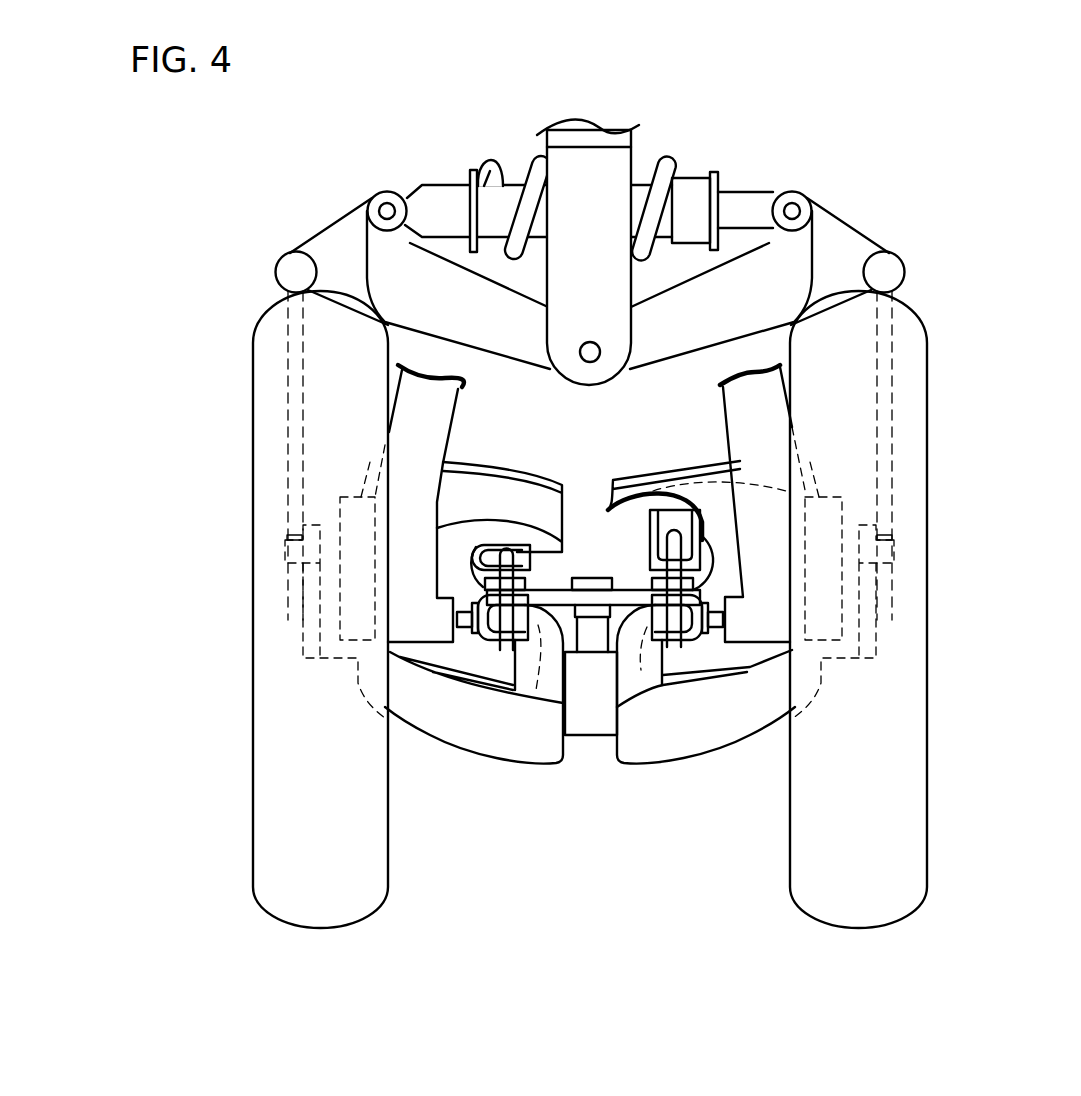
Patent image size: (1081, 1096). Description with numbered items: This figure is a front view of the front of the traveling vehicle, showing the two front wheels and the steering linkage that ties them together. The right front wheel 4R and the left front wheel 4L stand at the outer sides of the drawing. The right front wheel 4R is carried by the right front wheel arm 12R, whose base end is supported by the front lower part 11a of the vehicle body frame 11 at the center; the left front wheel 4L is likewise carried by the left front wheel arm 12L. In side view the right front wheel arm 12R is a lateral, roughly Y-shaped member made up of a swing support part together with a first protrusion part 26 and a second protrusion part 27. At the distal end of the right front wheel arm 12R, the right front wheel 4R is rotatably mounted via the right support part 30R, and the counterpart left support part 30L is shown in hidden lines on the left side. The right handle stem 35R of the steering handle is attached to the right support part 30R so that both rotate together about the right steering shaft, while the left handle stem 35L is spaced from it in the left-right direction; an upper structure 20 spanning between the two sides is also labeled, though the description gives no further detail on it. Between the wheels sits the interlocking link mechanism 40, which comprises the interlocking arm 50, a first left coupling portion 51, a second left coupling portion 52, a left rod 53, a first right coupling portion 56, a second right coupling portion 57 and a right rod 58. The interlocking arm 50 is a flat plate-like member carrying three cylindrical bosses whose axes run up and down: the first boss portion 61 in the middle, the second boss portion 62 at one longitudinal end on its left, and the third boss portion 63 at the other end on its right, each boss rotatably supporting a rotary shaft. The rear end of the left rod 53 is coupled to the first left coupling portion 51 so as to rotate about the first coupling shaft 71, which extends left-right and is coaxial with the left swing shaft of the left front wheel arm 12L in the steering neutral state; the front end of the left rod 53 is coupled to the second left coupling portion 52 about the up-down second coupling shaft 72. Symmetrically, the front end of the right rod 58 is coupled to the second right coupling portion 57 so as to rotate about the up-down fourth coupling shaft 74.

The right front wheel 4R is at (262, 787).
The left front wheel 4L is at (913, 787).
The vehicle body frame 11 is at (589, 752).
The front lower part 11a is at (597, 737).
The right front wheel arm 12R is at (474, 774).
The left front wheel arm 12L is at (714, 774).
The link mechanism 20 is at (336, 198).
The first protrusion part 26 is at (467, 465).
The second protrusion part 27 is at (413, 723).
The right support part 30R is at (300, 575).
The left brake caliper 30L is at (868, 630).
The right handle stem 35R is at (413, 407).
The left handle stem 35L is at (773, 402).
The interlocking link mechanism 40 is at (588, 443).
The interlocking arm 50 is at (562, 598).
The first left coupling portion 51 is at (683, 503).
The second left coupling portion 52 is at (687, 637).
The left rod 53 is at (703, 552).
The first right coupling portion 56 is at (483, 545).
The second right coupling portion 57 is at (505, 640).
The right rod 58 is at (520, 575).
The first boss portion 61 is at (597, 580).
The second boss portion 62 is at (693, 580).
The third boss portion 63 is at (503, 570).
The first coupling shaft 71 is at (700, 490).
The second coupling shaft 72 is at (641, 670).
The fourth coupling shaft 74 is at (538, 665).